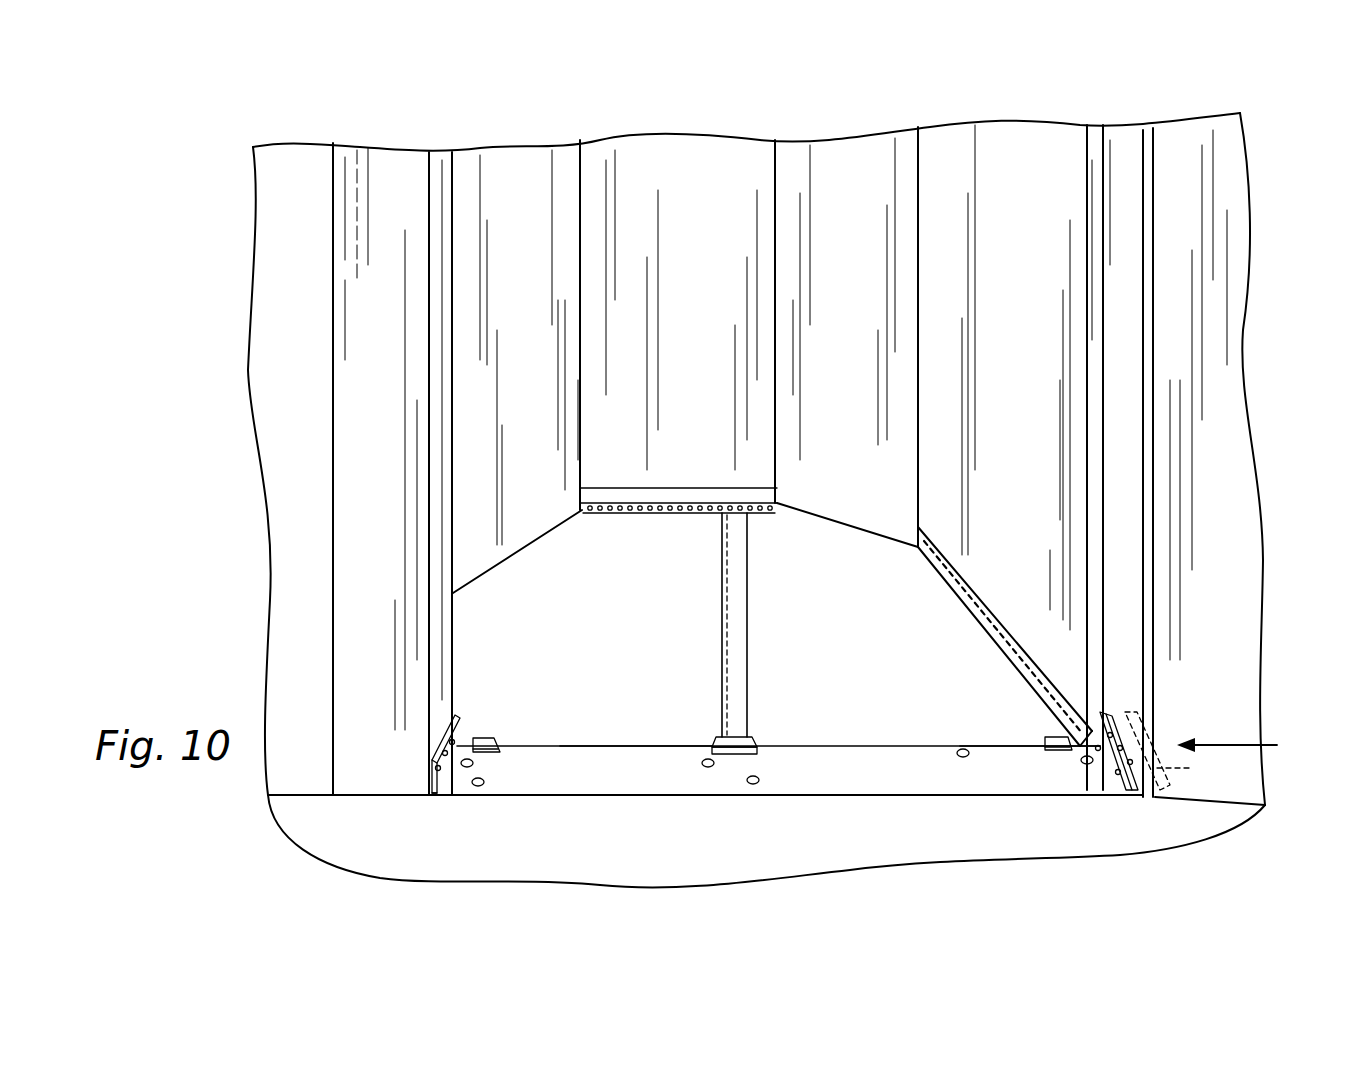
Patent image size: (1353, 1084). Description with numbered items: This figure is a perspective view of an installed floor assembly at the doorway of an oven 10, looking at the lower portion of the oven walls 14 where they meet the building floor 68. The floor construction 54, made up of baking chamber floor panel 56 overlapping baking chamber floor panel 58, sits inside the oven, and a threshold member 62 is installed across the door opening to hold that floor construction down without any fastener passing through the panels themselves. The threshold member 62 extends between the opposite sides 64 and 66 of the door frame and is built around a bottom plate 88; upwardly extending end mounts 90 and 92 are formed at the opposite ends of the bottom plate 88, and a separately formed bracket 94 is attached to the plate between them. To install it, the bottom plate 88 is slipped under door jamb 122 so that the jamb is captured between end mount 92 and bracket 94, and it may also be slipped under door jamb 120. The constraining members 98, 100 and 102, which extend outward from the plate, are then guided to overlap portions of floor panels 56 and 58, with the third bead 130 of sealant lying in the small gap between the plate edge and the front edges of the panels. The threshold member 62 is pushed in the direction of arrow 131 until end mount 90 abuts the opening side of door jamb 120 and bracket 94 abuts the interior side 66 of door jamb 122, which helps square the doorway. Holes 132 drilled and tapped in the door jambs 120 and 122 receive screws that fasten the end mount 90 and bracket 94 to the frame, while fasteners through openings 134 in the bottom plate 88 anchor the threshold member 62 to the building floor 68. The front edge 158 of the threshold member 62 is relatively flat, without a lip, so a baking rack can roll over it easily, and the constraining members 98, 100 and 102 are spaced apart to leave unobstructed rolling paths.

The oven 10 is at (1008, 190).
The walls 14 is at (662, 173).
The floor construction 54 is at (878, 618).
The baking chamber floor panel 56 is at (565, 593).
The baking chamber floor panel 58 is at (943, 635).
The threshold member 62 is at (997, 770).
The side of door frame 64 is at (437, 353).
The side of door frame 66 is at (1123, 357).
The building floor 68 is at (731, 849).
The bottom plate 88 is at (582, 783).
The end mount 90 is at (448, 767).
The end mount 92 is at (1190, 768).
The bracket 94 is at (1090, 760).
The constraining member 98 is at (500, 738).
The constraining member 100 is at (1043, 737).
The constraining member 102 is at (757, 743).
The door jamb 120 is at (380, 235).
The door jamb 122 is at (1123, 193).
The third bead of sealant 130 is at (622, 747).
The arrow 131 is at (1222, 744).
The holes 132 is at (457, 740).
The openings 134 is at (710, 770).
The front edge 158 is at (903, 793).